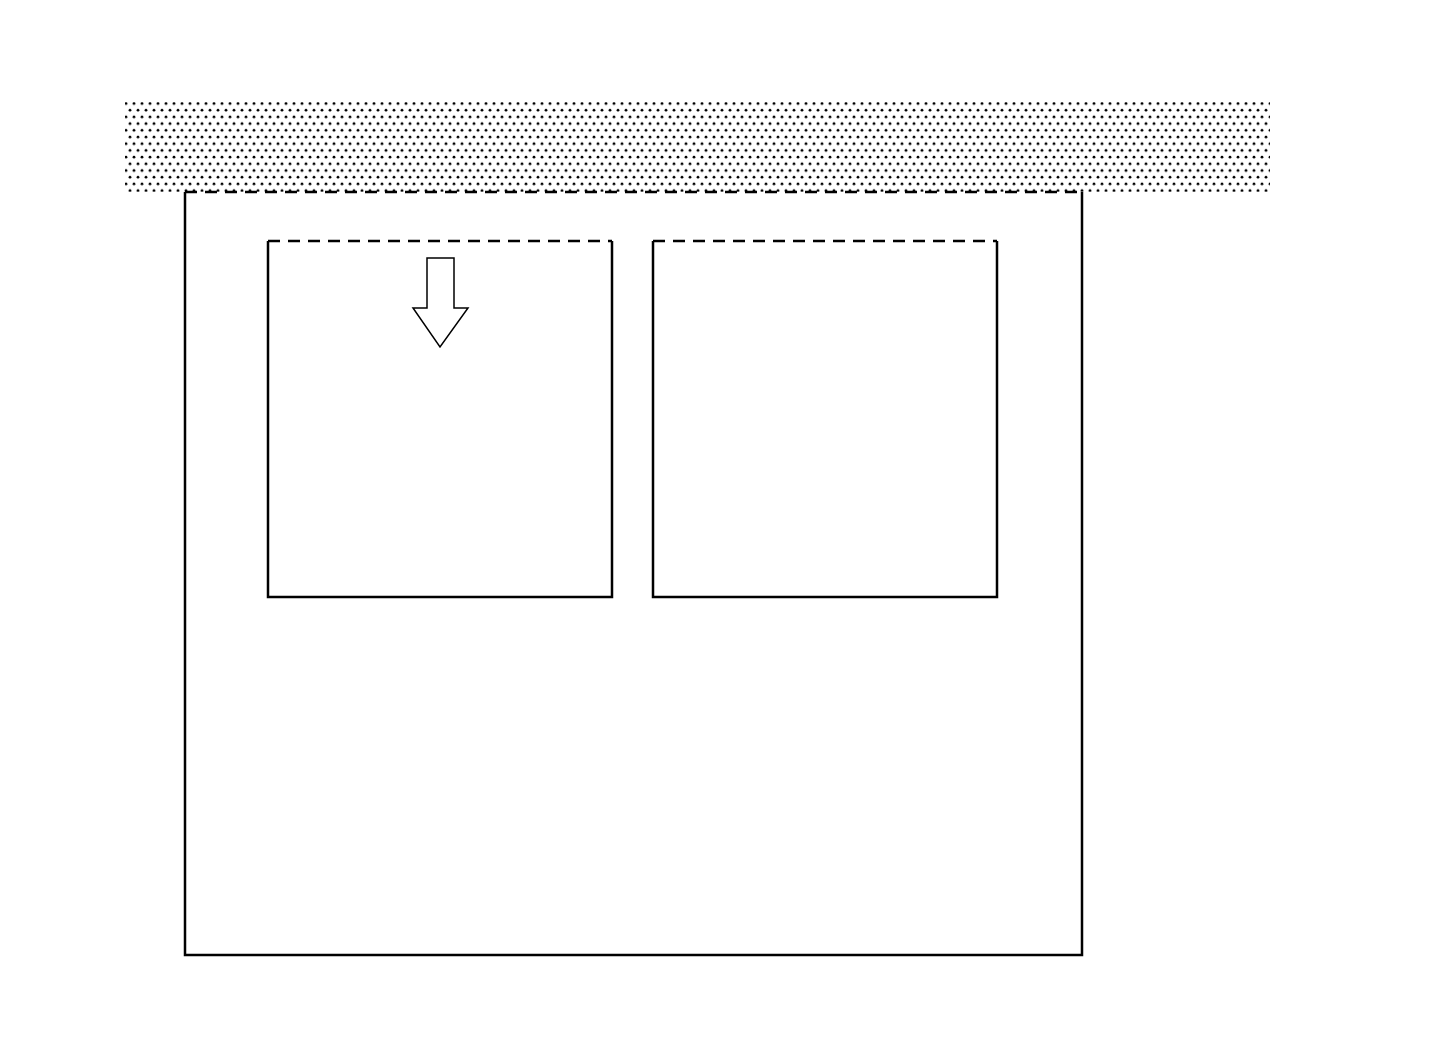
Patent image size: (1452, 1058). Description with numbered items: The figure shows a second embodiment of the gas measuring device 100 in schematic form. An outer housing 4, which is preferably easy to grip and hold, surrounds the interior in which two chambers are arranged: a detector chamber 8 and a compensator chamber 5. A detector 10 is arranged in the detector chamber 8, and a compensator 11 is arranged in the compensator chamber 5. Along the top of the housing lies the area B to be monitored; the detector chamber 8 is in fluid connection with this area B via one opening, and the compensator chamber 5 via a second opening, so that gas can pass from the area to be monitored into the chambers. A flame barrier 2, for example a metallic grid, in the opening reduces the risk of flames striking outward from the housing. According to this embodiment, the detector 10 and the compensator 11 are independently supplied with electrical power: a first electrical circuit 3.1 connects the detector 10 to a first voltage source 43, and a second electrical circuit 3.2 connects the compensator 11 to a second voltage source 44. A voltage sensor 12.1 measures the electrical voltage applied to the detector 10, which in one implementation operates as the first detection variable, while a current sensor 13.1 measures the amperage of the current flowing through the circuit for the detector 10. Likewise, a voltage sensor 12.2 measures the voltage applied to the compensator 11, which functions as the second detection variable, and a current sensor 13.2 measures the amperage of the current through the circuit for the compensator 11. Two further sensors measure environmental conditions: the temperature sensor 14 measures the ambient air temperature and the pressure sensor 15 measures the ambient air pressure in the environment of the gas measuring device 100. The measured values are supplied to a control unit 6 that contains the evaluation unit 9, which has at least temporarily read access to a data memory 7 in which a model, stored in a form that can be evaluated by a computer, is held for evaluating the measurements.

The flame barrier 2 is at (490, 190).
The area to be monitored B is at (1181, 120).
The outer housing 4 is at (185, 428).
The compensator chamber 5 is at (609, 364).
The detector chamber 8 is at (994, 364).
The compensator 11 is at (418, 412).
The detector 10 is at (803, 412).
The second electrical circuit 3.2 is at (358, 632).
The first electrical circuit 3.1 is at (742, 632).
The voltage sensor 12.2 is at (458, 700).
The voltage sensor 12.1 is at (842, 700).
The current sensor 13.2 is at (580, 732).
The current sensor 13.1 is at (964, 732).
The second voltage source 44 is at (424, 895).
The first voltage source 43 is at (808, 895).
The temperature sensor 14 is at (149, 788).
The pressure sensor 15 is at (1190, 748).
The control unit 6 is at (1287, 237).
The evaluation unit 9 is at (1251, 297).
The data memory 7 is at (1214, 530).
The gas measuring device 100 is at (1088, 606).